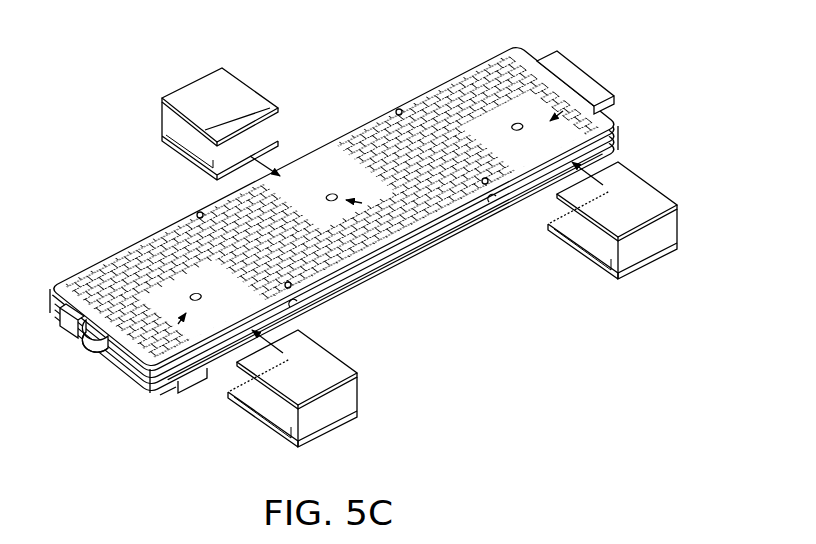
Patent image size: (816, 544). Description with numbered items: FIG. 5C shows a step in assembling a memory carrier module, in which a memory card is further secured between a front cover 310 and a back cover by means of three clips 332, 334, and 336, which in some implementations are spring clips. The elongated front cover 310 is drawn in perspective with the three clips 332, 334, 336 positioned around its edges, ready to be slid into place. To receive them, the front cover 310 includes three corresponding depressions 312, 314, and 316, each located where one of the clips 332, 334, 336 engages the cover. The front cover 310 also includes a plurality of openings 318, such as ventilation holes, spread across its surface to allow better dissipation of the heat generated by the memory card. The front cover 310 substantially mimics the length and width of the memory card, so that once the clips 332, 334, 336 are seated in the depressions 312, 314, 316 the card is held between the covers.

The front cover 310 is at (344, 219).
The depression 312 is at (166, 380).
The depression 314 is at (630, 105).
The depression 316 is at (410, 230).
The openings 318 is at (383, 122).
The clip 332 is at (325, 366).
The clip 334 is at (650, 196).
The clip 336 is at (190, 97).